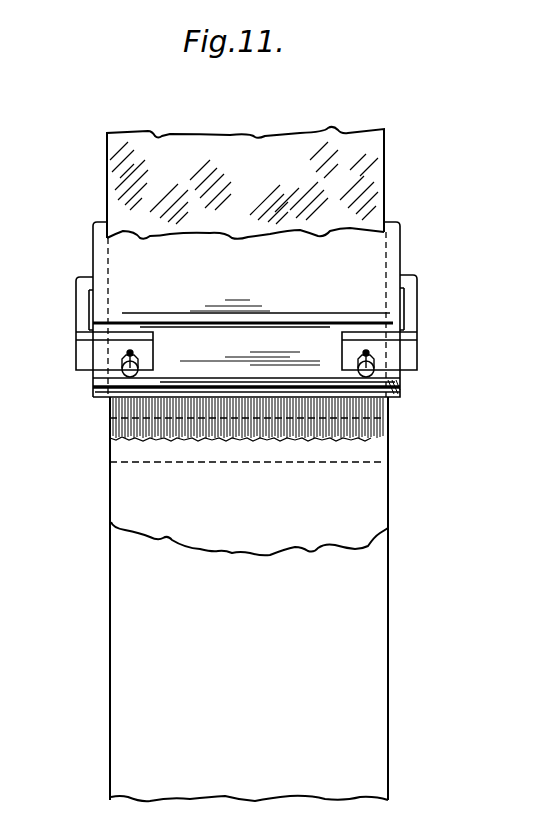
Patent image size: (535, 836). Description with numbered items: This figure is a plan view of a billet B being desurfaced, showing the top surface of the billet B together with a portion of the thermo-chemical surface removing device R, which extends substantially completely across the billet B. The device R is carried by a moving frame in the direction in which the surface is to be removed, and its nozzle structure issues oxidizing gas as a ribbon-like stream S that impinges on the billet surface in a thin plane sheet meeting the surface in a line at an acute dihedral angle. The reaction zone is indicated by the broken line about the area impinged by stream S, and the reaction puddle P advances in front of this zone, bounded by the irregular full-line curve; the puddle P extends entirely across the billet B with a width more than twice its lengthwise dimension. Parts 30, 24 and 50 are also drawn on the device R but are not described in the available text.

The billet B is at (212, 160).
The thermo-chemical surface removing device R is at (82, 265).
The clamping bar 30 is at (258, 353).
The bristle holder strip 24 is at (372, 398).
The bracket 50 is at (405, 353).
The ribbon-like stream of oxidizing gas S is at (122, 412).
The reaction puddle P is at (138, 487).